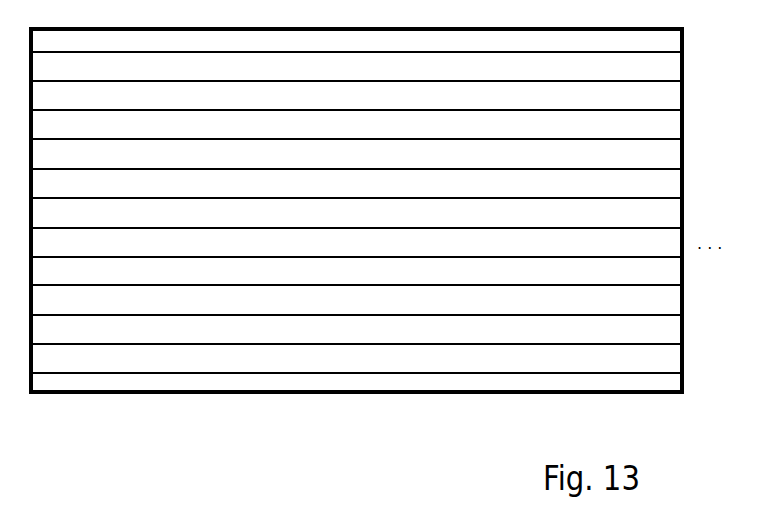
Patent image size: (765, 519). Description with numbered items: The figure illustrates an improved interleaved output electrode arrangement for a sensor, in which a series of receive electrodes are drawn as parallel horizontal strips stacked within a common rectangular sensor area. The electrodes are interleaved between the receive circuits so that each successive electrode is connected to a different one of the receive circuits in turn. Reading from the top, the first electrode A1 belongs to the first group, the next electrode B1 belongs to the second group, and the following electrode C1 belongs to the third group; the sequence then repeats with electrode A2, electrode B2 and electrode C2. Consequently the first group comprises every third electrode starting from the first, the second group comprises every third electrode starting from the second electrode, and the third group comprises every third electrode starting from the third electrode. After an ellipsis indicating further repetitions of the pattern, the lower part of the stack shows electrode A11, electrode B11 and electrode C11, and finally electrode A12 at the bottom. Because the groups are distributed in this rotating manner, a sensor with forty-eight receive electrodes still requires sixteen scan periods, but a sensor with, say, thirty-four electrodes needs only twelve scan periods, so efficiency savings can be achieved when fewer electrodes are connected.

The first electrode of first group A1 is at (375, 57).
The first electrode of second group B1 is at (375, 85).
The first electrode of third group C1 is at (375, 115).
The second electrode of first group A2 is at (375, 145).
The second electrode of second group B2 is at (375, 174).
The second electrode of third group C2 is at (375, 203).
The eleventh electrode of first group A11 is at (379, 290).
The eleventh electrode of second group B11 is at (379, 319).
The eleventh electrode of third group C11 is at (380, 348).
The twelfth electrode of first group A12 is at (379, 377).